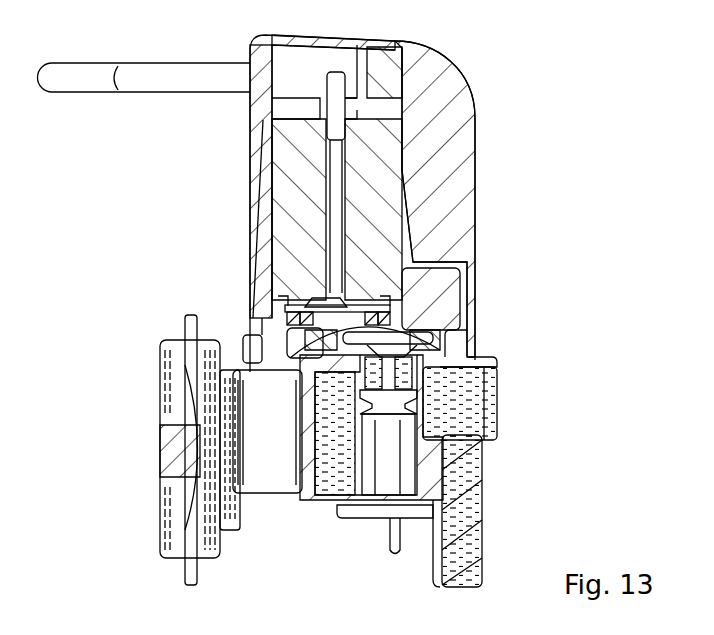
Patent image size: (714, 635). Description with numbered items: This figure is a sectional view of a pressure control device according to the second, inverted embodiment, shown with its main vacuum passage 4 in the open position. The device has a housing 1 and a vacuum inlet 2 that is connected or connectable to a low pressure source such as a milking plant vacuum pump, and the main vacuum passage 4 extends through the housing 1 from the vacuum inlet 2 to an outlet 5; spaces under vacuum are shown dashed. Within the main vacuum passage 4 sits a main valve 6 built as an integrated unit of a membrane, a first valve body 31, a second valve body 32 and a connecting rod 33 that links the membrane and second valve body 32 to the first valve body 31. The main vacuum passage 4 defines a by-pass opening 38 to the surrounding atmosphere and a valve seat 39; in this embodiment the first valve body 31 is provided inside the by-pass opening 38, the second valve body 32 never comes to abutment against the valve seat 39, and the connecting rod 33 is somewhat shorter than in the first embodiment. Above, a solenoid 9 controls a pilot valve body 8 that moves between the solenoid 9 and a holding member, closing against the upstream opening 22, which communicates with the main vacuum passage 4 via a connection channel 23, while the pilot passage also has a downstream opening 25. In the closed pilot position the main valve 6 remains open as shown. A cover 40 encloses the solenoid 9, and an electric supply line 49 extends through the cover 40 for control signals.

The housing 1 is at (247, 505).
The vacuum inlet 2 is at (145, 447).
The main vacuum passage 4 is at (320, 495).
The outlet 5 is at (465, 512).
The main valve 6 is at (490, 382).
The pilot valve body 8 is at (310, 303).
The solenoid 9 is at (378, 188).
The upstream opening 22 is at (273, 333).
The connection channel 23 is at (313, 347).
The downstream opening 25 is at (420, 330).
The first valve body 31 is at (400, 412).
The second valve body 32 is at (410, 340).
The connecting rod 33 is at (380, 396).
The by-pass opening 38 is at (400, 432).
The valve seat 39 is at (490, 357).
The cover 40 is at (450, 88).
The electric supply line 49 is at (140, 75).